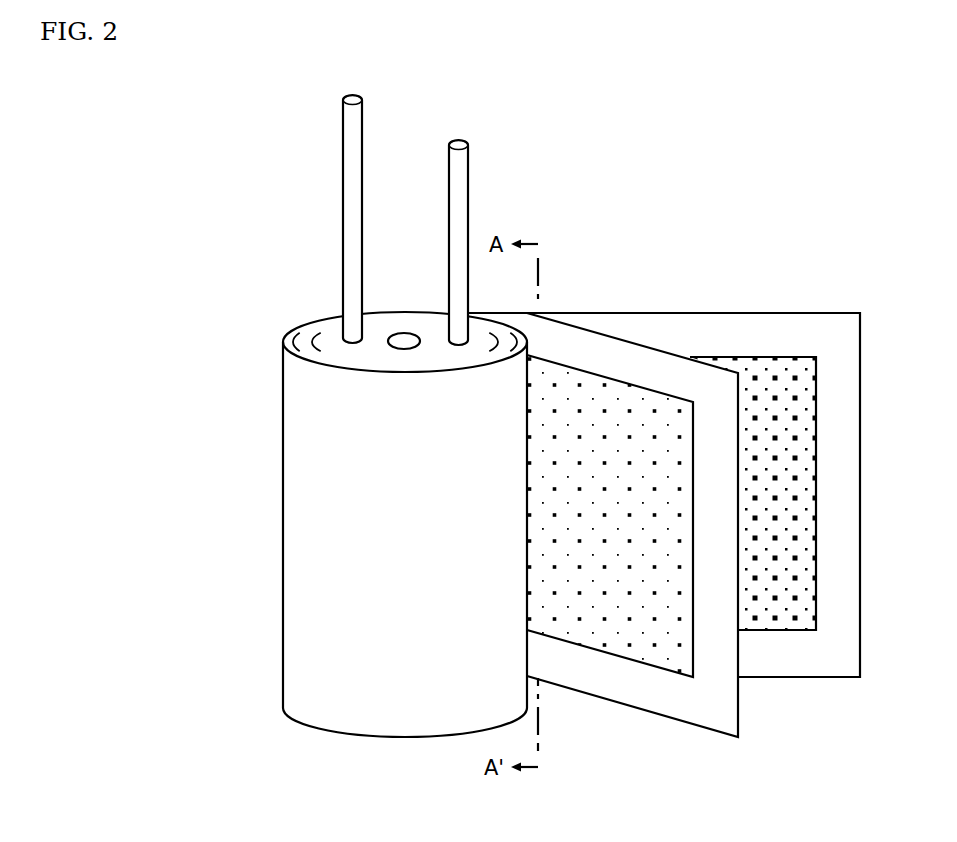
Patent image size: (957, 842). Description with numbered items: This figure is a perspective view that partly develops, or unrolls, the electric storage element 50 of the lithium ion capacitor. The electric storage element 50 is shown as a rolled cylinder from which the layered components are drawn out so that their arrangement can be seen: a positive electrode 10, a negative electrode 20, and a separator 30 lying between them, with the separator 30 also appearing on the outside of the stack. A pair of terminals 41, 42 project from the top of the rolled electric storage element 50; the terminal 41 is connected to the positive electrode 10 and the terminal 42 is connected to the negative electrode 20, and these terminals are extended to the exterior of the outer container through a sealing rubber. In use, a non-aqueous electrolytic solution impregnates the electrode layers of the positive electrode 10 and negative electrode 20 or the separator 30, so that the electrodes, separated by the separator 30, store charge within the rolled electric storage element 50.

The positive electrode 10 is at (633, 407).
The negative electrode 20 is at (767, 373).
The separator 30 is at (678, 373).
The terminal 41 is at (343, 173).
The terminal 42 is at (468, 173).
The electric storage element 50 is at (298, 462).